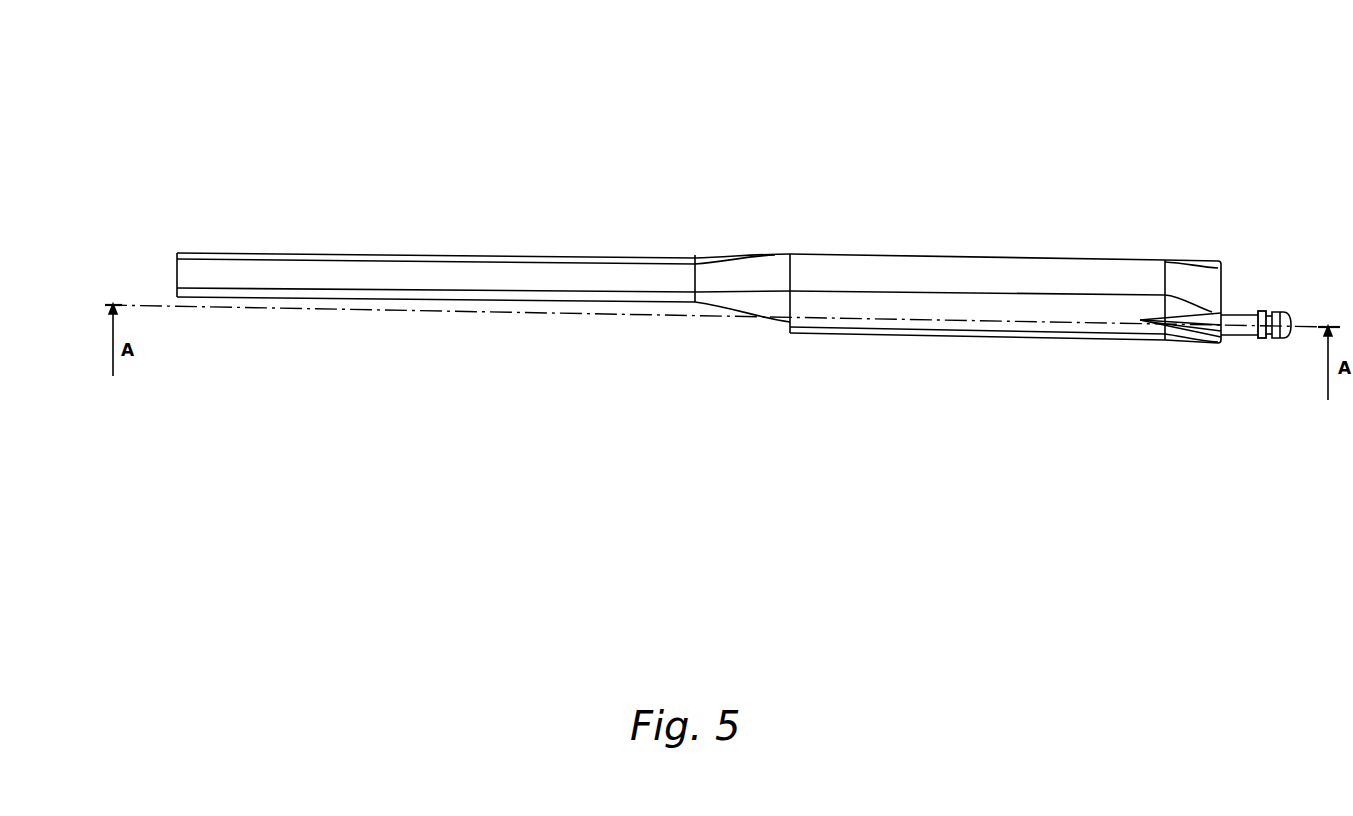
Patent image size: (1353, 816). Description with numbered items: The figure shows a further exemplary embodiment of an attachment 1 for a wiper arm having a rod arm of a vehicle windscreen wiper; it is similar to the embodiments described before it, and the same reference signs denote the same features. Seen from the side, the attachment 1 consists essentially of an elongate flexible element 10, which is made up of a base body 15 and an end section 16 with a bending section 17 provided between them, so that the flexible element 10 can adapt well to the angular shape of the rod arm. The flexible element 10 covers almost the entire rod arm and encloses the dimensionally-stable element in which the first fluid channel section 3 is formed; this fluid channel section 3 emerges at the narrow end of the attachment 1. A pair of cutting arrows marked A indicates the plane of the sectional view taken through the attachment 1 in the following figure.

The attachment 1 is at (987, 89).
The first fluid channel section 3 is at (1241, 313).
The flexible element 10 is at (970, 332).
The base body 15 is at (991, 287).
The end section 16 is at (616, 291).
The bending section 17 is at (763, 286).